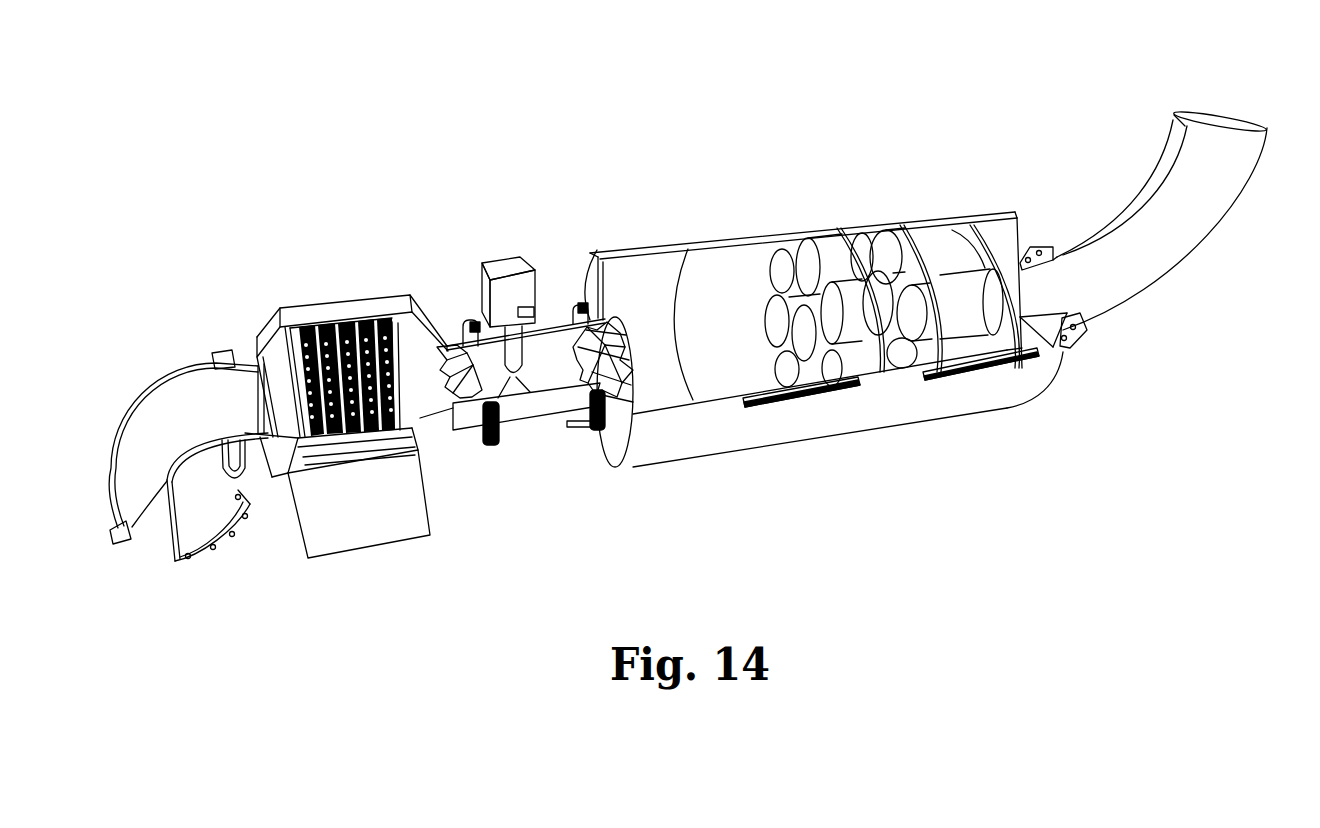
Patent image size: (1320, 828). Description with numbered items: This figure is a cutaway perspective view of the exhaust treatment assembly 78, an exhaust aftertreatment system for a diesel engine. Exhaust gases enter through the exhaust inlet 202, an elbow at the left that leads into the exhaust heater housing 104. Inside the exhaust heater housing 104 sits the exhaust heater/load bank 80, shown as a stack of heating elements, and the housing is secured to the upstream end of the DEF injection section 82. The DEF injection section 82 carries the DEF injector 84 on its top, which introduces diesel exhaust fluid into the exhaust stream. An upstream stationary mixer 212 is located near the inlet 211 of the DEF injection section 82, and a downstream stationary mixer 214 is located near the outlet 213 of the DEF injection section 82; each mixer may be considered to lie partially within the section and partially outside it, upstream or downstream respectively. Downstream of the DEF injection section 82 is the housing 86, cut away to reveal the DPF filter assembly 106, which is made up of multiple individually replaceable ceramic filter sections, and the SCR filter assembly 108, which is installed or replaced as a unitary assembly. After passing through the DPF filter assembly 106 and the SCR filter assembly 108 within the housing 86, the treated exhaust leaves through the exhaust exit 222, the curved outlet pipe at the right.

The exhaust treatment assembly 78 is at (455, 168).
The exhaust heater/load bank 80 is at (362, 422).
The DEF injection section 82 is at (530, 408).
The DEF injector 84 is at (503, 262).
The housing 86 is at (821, 420).
The exhaust heater housing 104 is at (314, 309).
The DPF filter assembly 106 is at (826, 256).
The SCR filter assembly 108 is at (967, 325).
The exhaust inlet 202 is at (188, 524).
The inlet of the DEF injection section 211 is at (453, 343).
The upstream stationary mixer 212 is at (462, 400).
The outlet of the DEF injection section 213 is at (582, 305).
The downstream stationary mixer 214 is at (631, 446).
The exhaust exit 222 is at (1166, 273).